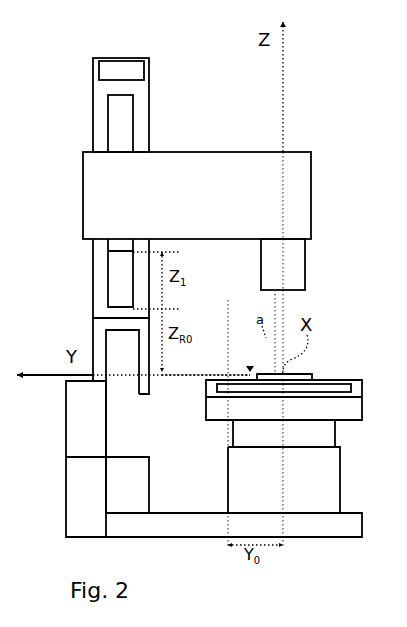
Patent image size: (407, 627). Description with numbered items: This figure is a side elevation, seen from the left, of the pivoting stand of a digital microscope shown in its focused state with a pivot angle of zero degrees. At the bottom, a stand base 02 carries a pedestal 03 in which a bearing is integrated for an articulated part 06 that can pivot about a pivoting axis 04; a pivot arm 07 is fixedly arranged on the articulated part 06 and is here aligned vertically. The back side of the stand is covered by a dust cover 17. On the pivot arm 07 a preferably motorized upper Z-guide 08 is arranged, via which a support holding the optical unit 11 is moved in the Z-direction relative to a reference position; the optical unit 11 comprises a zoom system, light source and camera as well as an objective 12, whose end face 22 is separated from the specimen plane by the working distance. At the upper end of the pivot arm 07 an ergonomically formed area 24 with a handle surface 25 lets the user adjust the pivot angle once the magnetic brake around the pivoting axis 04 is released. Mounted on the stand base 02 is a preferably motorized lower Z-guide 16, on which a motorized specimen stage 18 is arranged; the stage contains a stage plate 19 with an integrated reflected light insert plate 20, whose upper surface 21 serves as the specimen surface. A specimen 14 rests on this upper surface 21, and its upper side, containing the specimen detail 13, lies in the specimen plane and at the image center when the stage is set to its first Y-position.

The handle surface 25 is at (108, 58).
The ergonomically formed area 24 is at (130, 72).
The upper Z-guide 08 is at (123, 128).
The optical unit 11 is at (205, 162).
The objective 12 is at (293, 267).
The end face 22 is at (290, 292).
The pivot arm 07 is at (108, 296).
The articulated part 06 is at (100, 345).
The pivoting axis 04 is at (128, 366).
The pedestal 03 is at (142, 486).
The stand base 02 is at (165, 522).
The dust cover 17 is at (82, 516).
The specimen stage 18 is at (212, 397).
The specimen 14 is at (306, 383).
The lower Z-guide 16 is at (250, 437).
The reflected light insert plate 20 is at (249, 368).
The upper surface 21 is at (245, 368).
The specimen detail 13 is at (300, 372).
The stage plate 19 is at (206, 360).